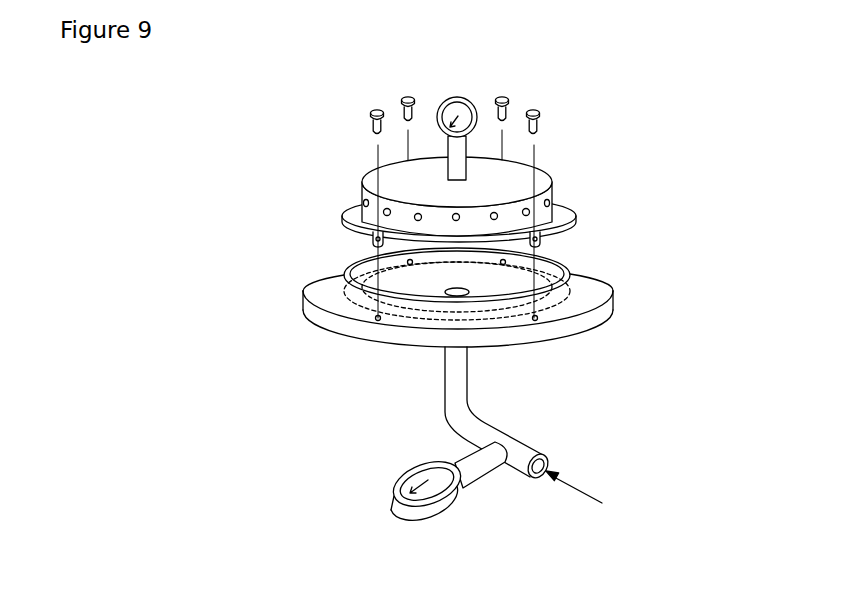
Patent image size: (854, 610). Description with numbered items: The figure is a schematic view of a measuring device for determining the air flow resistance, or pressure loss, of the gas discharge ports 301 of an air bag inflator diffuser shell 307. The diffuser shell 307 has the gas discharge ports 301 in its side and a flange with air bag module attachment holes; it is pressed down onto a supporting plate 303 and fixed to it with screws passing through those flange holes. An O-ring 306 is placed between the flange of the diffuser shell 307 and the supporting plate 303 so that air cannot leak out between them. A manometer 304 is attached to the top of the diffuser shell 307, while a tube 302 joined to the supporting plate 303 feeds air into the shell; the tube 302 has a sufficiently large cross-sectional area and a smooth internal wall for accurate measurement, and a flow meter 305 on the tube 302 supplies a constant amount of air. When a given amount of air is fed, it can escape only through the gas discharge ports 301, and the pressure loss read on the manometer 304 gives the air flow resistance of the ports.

The gas discharge ports 301 is at (548, 196).
The tube 302 is at (497, 427).
The supporting plate 303 is at (583, 326).
The manometer 304 is at (461, 97).
The flow meter 305 is at (405, 512).
The O-ring 306 is at (343, 273).
The diffuser shell 307 is at (367, 178).